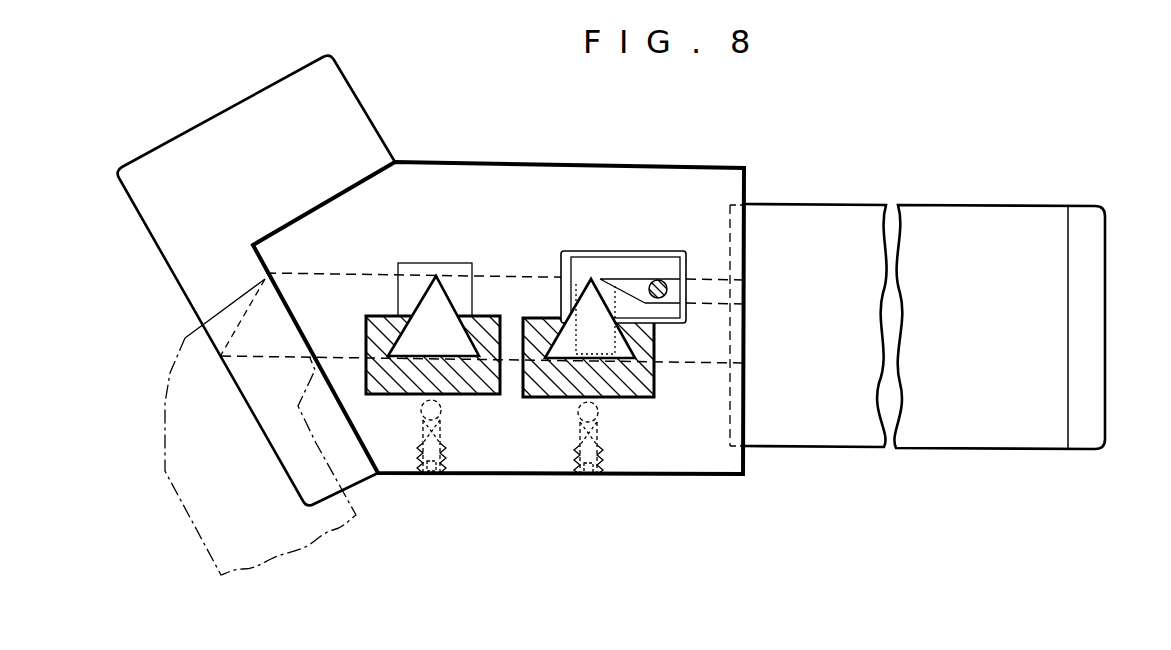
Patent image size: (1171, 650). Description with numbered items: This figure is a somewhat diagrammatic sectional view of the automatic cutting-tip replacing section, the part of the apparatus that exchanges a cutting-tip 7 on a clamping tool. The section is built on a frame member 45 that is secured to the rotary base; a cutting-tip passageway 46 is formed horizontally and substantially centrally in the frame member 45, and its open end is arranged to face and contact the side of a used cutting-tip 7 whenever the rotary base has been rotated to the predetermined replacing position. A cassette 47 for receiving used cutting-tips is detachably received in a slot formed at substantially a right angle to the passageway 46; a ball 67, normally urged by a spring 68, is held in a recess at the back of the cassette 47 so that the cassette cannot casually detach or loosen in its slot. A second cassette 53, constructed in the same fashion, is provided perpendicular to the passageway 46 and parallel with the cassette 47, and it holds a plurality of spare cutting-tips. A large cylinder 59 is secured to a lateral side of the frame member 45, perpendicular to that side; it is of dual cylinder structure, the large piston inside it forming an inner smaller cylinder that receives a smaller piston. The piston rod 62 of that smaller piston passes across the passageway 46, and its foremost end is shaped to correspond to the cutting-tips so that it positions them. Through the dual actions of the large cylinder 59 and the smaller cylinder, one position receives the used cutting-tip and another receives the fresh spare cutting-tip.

The cutting-tip 7 is at (437, 290).
The frame member 45 is at (697, 458).
The cutting-tip passageway 46 is at (348, 270).
The cassette 47 is at (389, 384).
The cassette 53 is at (630, 386).
The large cylinder 59 is at (925, 215).
The piston rod 62 is at (612, 288).
The ball 67 is at (446, 405).
The spring 68 is at (442, 440).